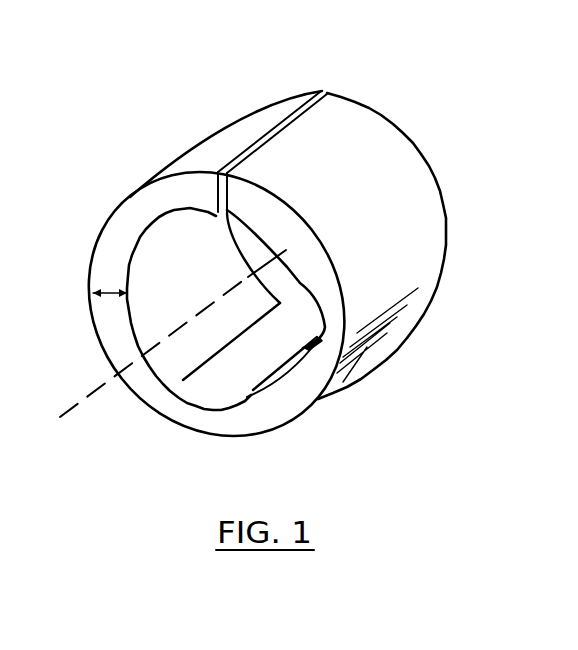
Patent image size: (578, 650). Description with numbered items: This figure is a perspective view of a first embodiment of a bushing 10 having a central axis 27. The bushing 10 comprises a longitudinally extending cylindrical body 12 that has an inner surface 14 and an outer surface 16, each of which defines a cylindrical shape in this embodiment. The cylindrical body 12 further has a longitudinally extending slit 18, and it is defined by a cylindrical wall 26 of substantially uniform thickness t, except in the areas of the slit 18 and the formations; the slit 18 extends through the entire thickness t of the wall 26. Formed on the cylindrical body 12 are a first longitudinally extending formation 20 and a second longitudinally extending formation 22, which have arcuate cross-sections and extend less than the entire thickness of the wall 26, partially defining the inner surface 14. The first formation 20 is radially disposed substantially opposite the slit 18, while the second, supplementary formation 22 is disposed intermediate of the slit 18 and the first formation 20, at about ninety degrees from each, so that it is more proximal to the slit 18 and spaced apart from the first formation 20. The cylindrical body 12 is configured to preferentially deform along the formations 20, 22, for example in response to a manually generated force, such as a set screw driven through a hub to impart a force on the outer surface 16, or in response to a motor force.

The bushing 10 is at (445, 90).
The longitudinally extending cylindrical body 12 is at (447, 232).
The inner surface 14 is at (178, 305).
The outer surface 16 is at (382, 214).
The longitudinally extending slit 18 is at (219, 192).
The first longitudinally extending formation 20 is at (204, 402).
The second longitudinally extending formation 22 is at (322, 336).
The cylindrical wall 26 is at (273, 410).
The central axis 27 is at (83, 409).
The thickness t is at (110, 292).